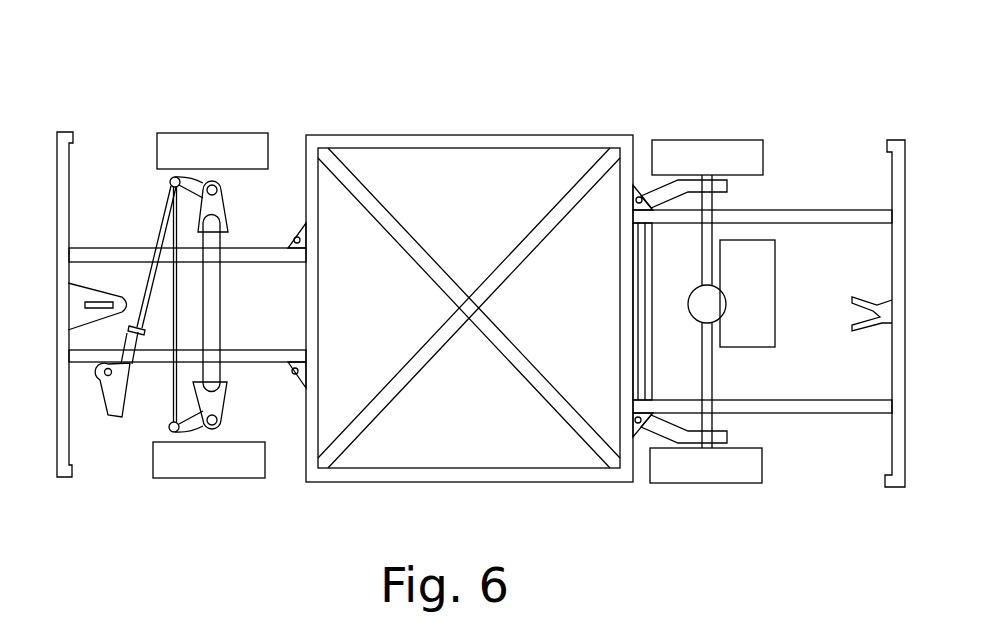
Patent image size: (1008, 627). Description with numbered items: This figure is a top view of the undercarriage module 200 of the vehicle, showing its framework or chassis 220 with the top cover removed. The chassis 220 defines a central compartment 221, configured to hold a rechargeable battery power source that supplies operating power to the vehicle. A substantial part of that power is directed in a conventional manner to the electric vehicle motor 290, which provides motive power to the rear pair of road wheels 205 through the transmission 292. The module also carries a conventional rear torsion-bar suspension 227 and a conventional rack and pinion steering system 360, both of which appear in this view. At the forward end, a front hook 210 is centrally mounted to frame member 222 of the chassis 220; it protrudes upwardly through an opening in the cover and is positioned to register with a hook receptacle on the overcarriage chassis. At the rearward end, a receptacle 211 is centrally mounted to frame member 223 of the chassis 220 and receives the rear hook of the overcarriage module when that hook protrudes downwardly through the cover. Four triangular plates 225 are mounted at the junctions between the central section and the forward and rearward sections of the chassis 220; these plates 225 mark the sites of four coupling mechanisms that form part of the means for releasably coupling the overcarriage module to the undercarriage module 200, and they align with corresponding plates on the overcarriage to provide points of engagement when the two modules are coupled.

The undercarriage module 200 is at (252, 62).
The road wheels 205 is at (237, 133).
The front hook 210 is at (123, 288).
The receptacle 211 is at (857, 333).
The chassis 220 is at (452, 135).
The central compartment 221 is at (491, 223).
The frame member 222 is at (65, 222).
The frame member 223 is at (890, 285).
The plates 225 is at (300, 242).
The rear torsion-bar suspension 227 is at (637, 355).
The electric vehicle motor 290 is at (732, 335).
The transmission 292 is at (690, 307).
The rack and pinion steering system 360 is at (120, 417).